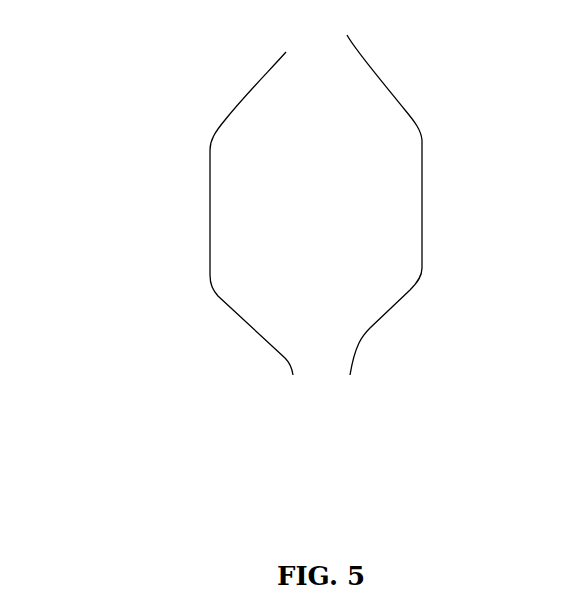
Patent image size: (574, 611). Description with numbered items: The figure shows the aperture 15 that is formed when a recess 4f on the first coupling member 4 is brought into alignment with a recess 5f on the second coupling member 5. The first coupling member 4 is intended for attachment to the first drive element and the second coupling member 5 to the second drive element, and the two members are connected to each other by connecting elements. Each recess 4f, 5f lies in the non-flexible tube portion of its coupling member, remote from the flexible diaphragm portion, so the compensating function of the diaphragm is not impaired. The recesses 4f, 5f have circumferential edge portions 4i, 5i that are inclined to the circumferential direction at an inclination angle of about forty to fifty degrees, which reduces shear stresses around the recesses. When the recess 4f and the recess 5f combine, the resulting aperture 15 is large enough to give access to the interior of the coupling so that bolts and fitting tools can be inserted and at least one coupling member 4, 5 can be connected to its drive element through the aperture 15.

The first coupling member 4 is at (208, 153).
The recess 4f is at (211, 217).
The circumferential edge portion 4i is at (243, 317).
The aperture 15 is at (266, 247).
The second coupling member 5 is at (422, 137).
The recess 5f is at (422, 200).
The circumferential edge portion 5i is at (397, 302).